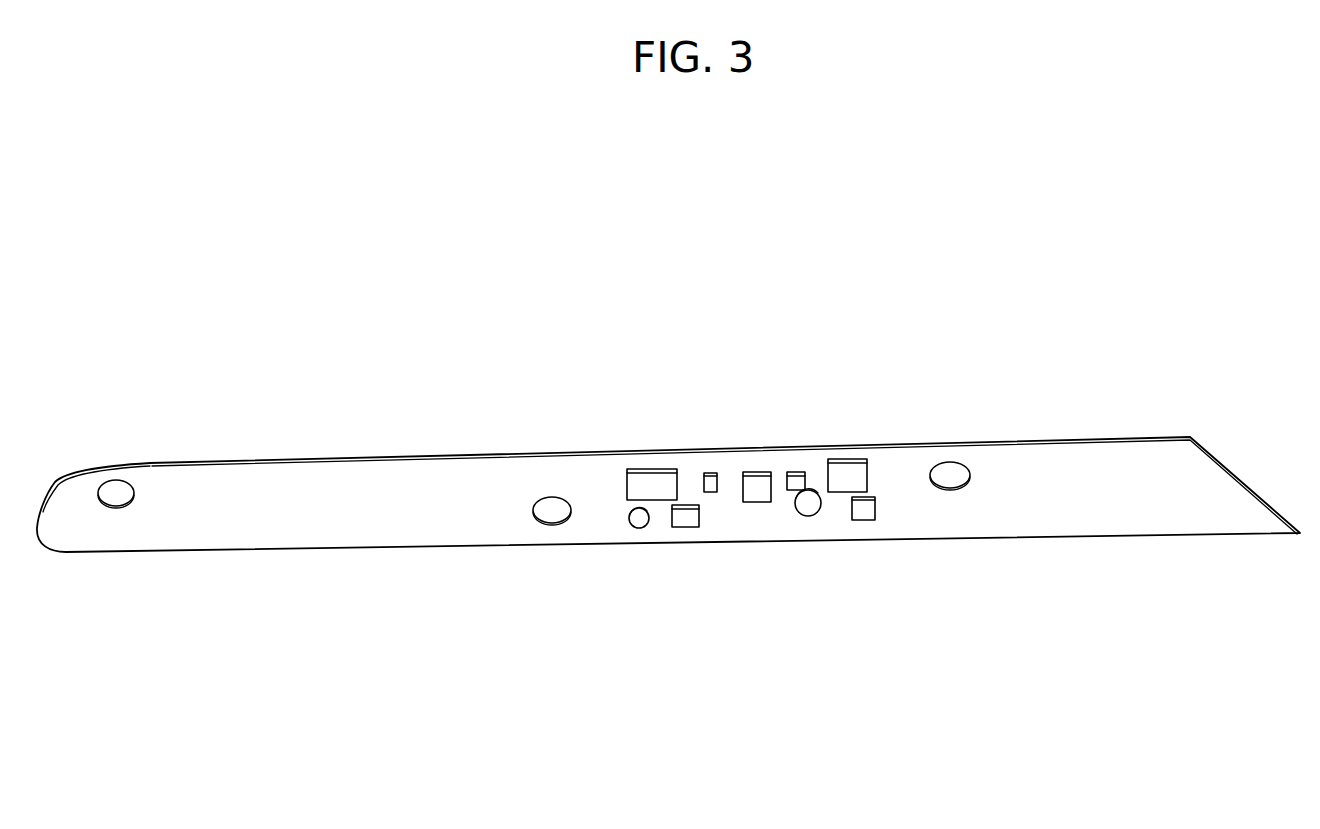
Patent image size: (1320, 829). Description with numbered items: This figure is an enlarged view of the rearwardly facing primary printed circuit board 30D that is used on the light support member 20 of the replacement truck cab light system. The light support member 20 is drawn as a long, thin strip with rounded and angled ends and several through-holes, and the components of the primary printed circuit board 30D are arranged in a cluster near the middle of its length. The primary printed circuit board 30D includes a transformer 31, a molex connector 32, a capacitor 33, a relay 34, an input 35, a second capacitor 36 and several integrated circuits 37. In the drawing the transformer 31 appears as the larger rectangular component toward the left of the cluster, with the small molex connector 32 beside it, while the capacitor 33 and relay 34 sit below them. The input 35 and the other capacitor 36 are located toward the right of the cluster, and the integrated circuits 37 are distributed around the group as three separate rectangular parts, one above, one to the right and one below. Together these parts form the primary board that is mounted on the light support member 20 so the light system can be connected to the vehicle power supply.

The primary printed circuit board 30D is at (201, 180).
The light support member 20 is at (260, 547).
The transformer 31 is at (652, 480).
The molex connector 32 is at (709, 482).
The capacitor 33 is at (633, 522).
The relay 34 is at (687, 520).
The input 35 is at (792, 483).
The capacitor 36 is at (807, 510).
The integrated circuits 37 is at (750, 497).